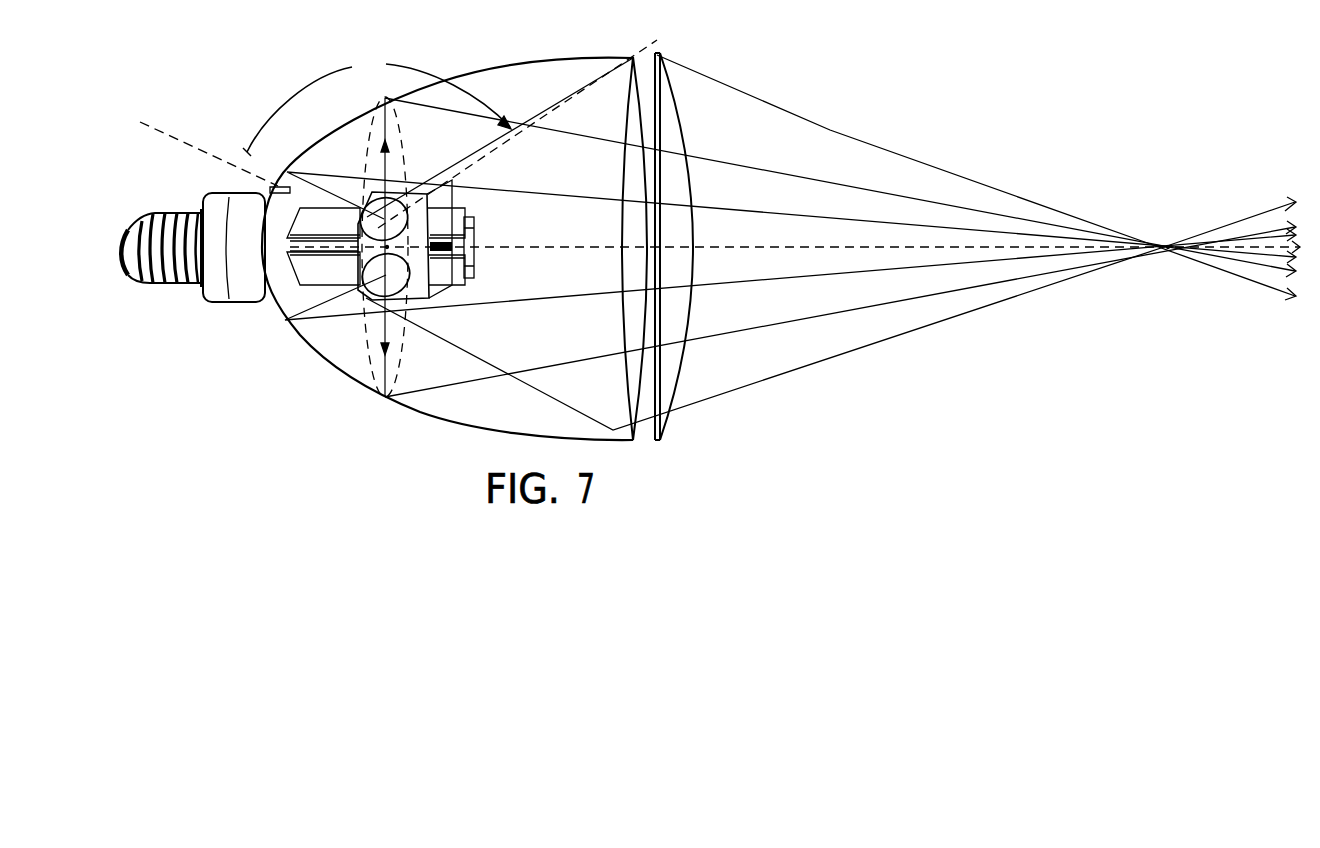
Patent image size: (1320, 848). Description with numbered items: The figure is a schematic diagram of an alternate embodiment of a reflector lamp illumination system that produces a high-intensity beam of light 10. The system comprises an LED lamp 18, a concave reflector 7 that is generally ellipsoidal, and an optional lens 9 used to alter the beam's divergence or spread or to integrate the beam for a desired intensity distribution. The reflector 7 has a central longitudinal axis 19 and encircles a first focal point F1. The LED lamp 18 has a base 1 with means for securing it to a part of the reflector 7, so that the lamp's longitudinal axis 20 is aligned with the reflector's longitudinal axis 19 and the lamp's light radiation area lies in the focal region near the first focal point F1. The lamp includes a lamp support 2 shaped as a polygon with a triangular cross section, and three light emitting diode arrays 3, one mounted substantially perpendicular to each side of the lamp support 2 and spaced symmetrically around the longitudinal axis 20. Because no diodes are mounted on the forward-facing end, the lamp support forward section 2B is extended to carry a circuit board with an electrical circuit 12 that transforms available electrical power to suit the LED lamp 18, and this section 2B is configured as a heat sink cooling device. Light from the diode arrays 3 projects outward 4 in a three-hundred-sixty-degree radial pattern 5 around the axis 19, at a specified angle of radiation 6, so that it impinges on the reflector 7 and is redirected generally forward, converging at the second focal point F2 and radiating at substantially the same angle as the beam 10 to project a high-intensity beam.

The base 1 is at (224, 250).
The LED lamp 18 is at (247, 198).
The concave reflector 7 is at (515, 63).
The angle of light radiation 6 is at (377, 102).
The 360 degree radial pattern 5 is at (405, 158).
The lamp longitudinal axis 20 is at (320, 247).
The lamp support 2 is at (333, 276).
The outward light projection 4 is at (382, 171).
The light emitting diode arrays 3 is at (370, 281).
The lamp support forward section 2B is at (467, 245).
The electrical circuit 12 is at (467, 253).
The lens 9 is at (687, 142).
The reflector longitudinal axis 19 is at (843, 247).
The second focal point F2 is at (1170, 247).
The beam of light 10 is at (1248, 222).
The first focal point F1 is at (387, 250).